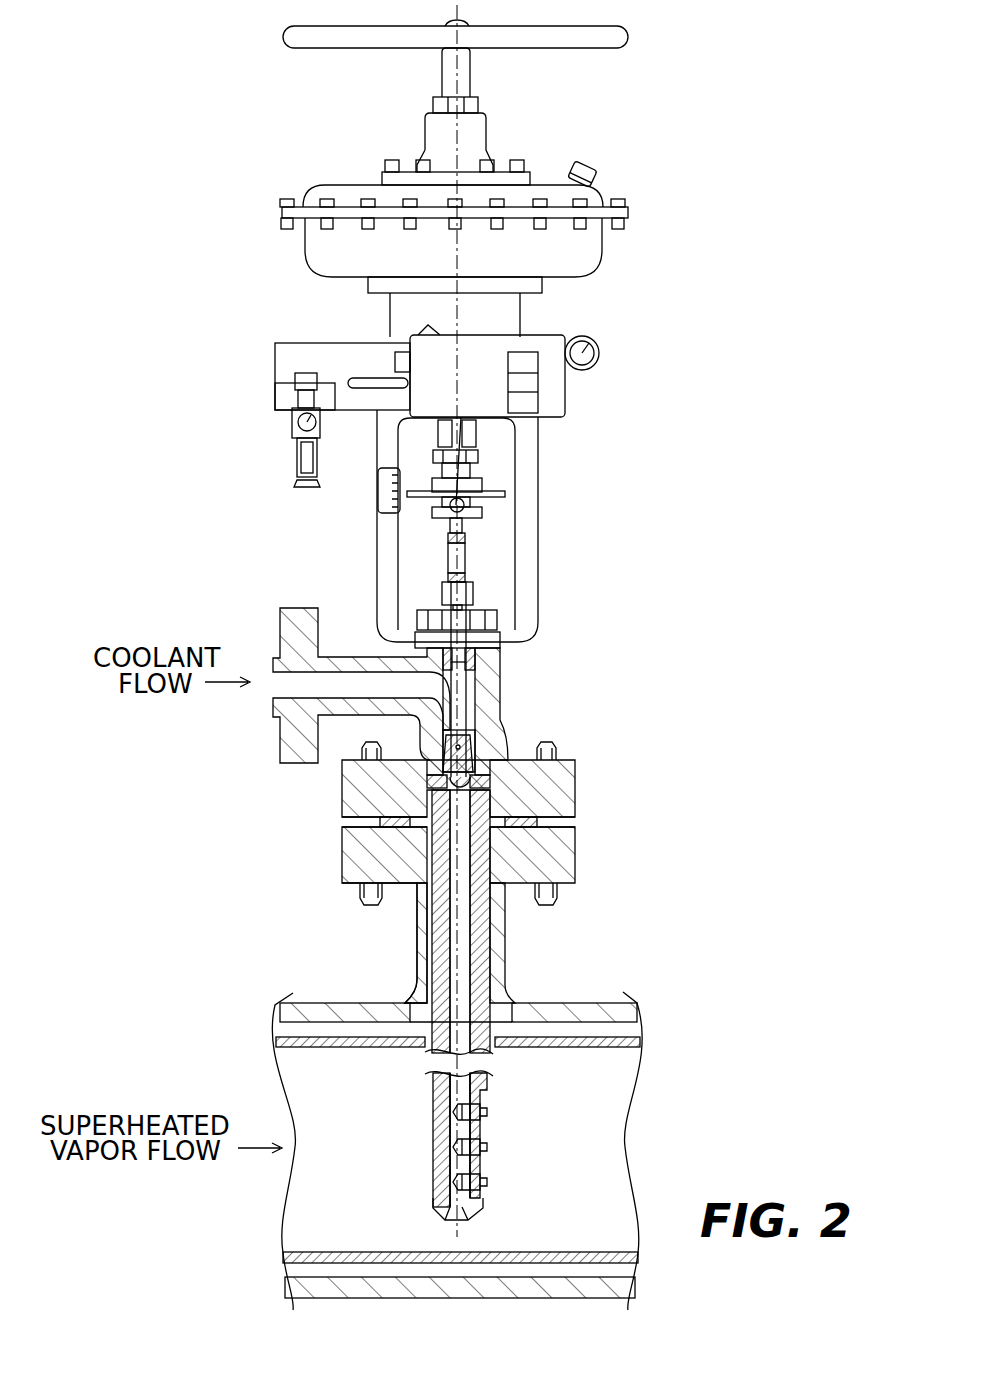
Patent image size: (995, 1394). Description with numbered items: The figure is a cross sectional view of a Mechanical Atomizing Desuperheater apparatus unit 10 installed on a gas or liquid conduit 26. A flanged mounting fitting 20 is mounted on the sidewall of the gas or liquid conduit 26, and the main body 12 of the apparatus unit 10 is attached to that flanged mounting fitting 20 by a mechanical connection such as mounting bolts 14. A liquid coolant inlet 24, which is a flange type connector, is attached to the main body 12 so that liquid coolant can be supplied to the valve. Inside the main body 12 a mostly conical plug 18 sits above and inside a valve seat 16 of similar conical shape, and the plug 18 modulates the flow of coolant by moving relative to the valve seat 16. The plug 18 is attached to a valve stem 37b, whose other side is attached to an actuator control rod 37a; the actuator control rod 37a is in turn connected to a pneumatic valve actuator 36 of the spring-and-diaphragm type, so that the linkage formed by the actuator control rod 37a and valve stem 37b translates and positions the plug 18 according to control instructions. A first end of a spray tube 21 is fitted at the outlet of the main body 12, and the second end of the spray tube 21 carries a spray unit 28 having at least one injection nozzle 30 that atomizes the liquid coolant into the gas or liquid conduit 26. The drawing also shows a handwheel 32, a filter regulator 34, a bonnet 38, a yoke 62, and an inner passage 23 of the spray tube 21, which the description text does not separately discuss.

The Mechanical Atomizing Desuperheater apparatus unit 10 is at (683, 382).
The main body 12 is at (464, 685).
The mounting bolts 14 is at (553, 750).
The valve seat 16 is at (503, 728).
The plug 18 is at (500, 707).
The flanged mounting fitting 20 is at (577, 848).
The spray tube 21 is at (483, 955).
The inner passage 23 is at (466, 983).
The liquid coolant inlet 24 is at (268, 692).
The gas or liquid conduit 26 is at (637, 1010).
The spray unit 28 is at (490, 1083).
The injection nozzle 30 is at (487, 1107).
The handwheel 32 is at (600, 50).
The filter regulator 34 is at (297, 457).
The pneumatic valve actuator 36 is at (481, 487).
The actuator control rod 37a is at (466, 553).
The valve stem 37b is at (503, 672).
The bonnet 38 is at (499, 645).
The yoke 62 is at (538, 510).